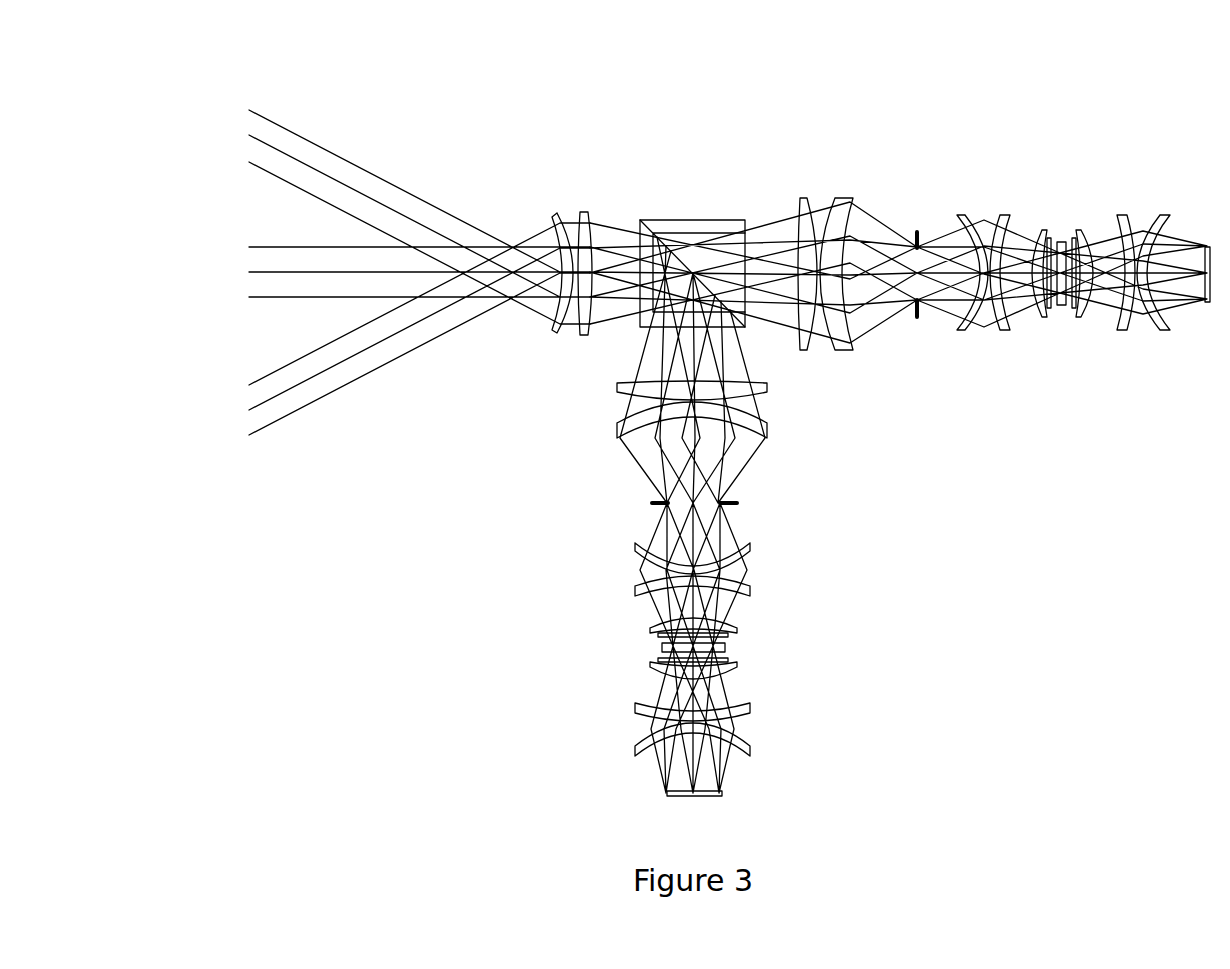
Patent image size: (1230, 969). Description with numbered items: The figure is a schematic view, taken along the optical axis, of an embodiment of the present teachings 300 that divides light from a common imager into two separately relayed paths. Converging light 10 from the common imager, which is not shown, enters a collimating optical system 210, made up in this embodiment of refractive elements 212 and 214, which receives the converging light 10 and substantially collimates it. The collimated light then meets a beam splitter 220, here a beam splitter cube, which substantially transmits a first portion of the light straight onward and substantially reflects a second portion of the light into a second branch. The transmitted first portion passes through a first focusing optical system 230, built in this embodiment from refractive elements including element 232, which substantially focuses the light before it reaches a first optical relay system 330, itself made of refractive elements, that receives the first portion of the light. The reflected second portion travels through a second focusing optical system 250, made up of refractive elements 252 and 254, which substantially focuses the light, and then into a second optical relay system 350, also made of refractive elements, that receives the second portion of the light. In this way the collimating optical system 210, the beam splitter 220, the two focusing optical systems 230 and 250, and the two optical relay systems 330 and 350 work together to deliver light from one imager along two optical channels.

The converging light 10 is at (235, 85).
The embodiment of the present teachings 300 is at (408, 103).
The collimating optical system 210 is at (532, 200).
The refractive element 212 is at (552, 331).
The refractive element 214 is at (580, 340).
The beam splitter 220 is at (714, 220).
The first focusing optical system 230 is at (865, 185).
The refractive element 232 is at (870, 373).
The second focusing optical system 250 is at (607, 372).
The refractive element 252 is at (767, 398).
The refractive element 254 is at (767, 432).
The first optical relay system 330 is at (903, 327).
The second optical relay system 350 is at (640, 492).